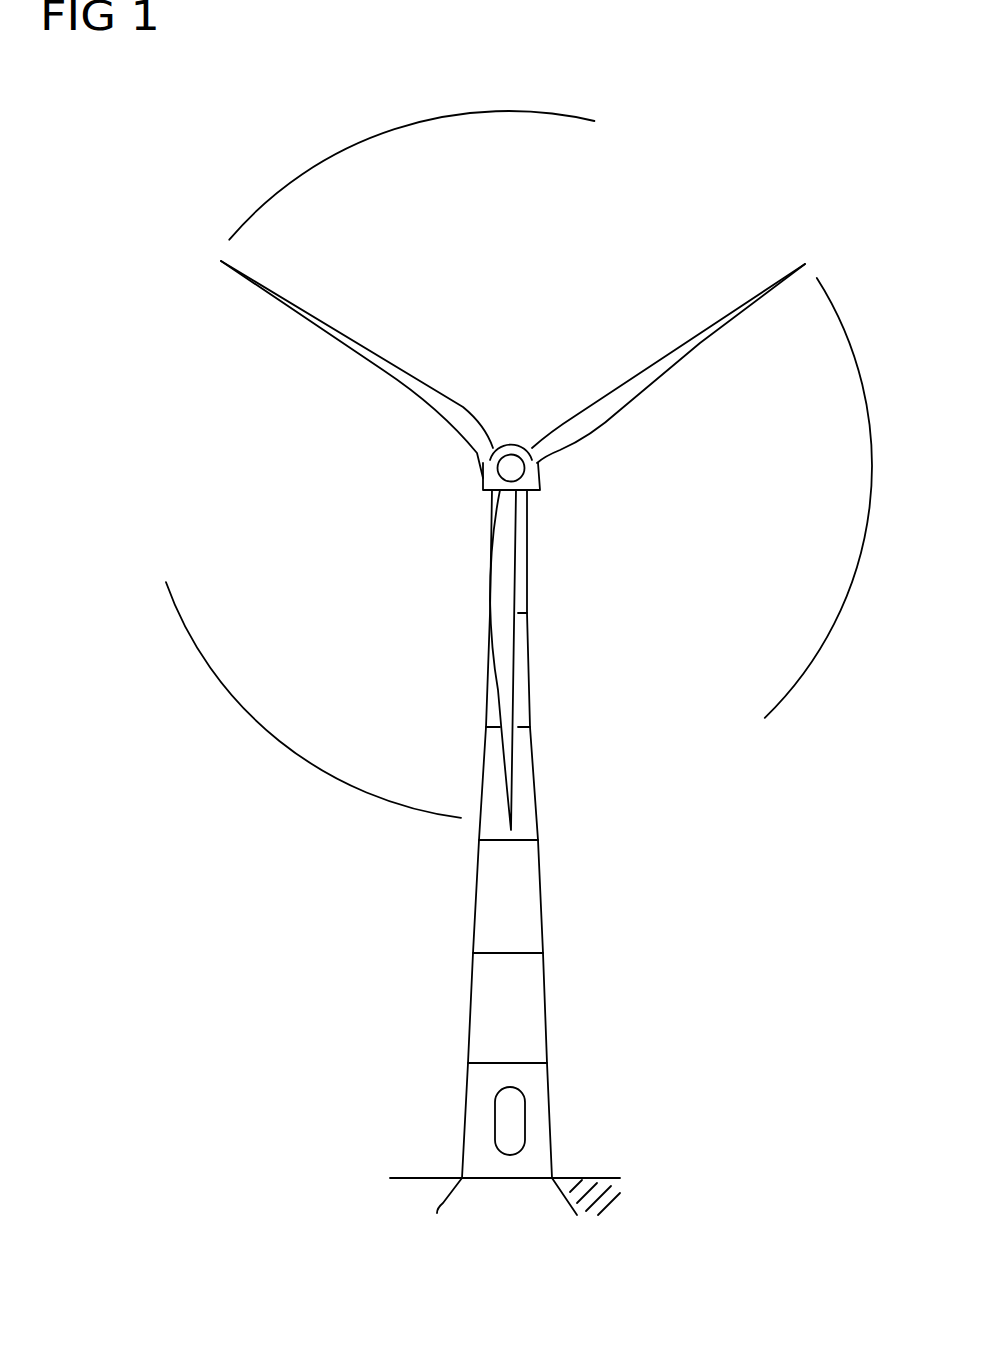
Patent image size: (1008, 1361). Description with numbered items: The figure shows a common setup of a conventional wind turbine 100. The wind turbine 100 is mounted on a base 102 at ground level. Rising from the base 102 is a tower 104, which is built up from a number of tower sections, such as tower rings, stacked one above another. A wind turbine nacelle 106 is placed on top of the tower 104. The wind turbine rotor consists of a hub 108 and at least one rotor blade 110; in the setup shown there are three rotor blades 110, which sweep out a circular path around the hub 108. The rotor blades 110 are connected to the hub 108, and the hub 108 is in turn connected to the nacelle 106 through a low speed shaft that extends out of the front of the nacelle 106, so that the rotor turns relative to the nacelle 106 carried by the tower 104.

The wind turbine 100 is at (447, 1024).
The base 102 is at (453, 1202).
The tower 104 is at (535, 908).
The wind turbine nacelle 106 is at (537, 490).
The hub 108 is at (480, 462).
The rotor blade 110 is at (510, 692).